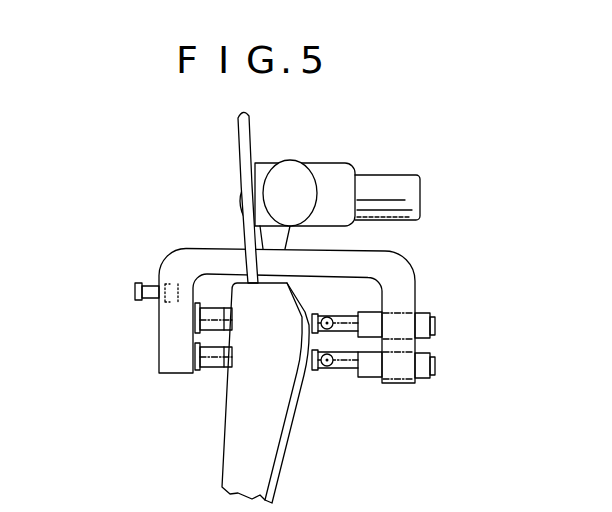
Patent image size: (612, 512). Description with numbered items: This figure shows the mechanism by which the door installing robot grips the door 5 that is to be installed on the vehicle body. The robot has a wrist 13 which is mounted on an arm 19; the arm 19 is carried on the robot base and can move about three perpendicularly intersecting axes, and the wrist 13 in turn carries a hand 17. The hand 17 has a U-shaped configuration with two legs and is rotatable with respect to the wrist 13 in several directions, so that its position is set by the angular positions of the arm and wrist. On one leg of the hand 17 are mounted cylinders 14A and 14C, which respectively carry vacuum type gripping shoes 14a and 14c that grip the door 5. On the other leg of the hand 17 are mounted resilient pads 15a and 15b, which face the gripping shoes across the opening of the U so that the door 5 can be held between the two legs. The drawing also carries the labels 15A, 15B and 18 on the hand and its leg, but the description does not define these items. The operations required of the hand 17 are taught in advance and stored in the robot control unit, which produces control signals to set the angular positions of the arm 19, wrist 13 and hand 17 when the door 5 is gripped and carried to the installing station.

The door 5 is at (288, 468).
The wrist 13 is at (304, 154).
The gripping shoe 14a is at (315, 317).
The gripping shoe 14c is at (315, 375).
The cylinder 14A is at (427, 317).
The cylinder 14C is at (375, 378).
The resilient pad 15a is at (229, 322).
The resilient pad 15b is at (229, 361).
The hole 15A is at (210, 306).
The hole 15B is at (203, 375).
The hand 17 is at (158, 254).
The pin 18 is at (143, 302).
The arm 19 is at (390, 178).